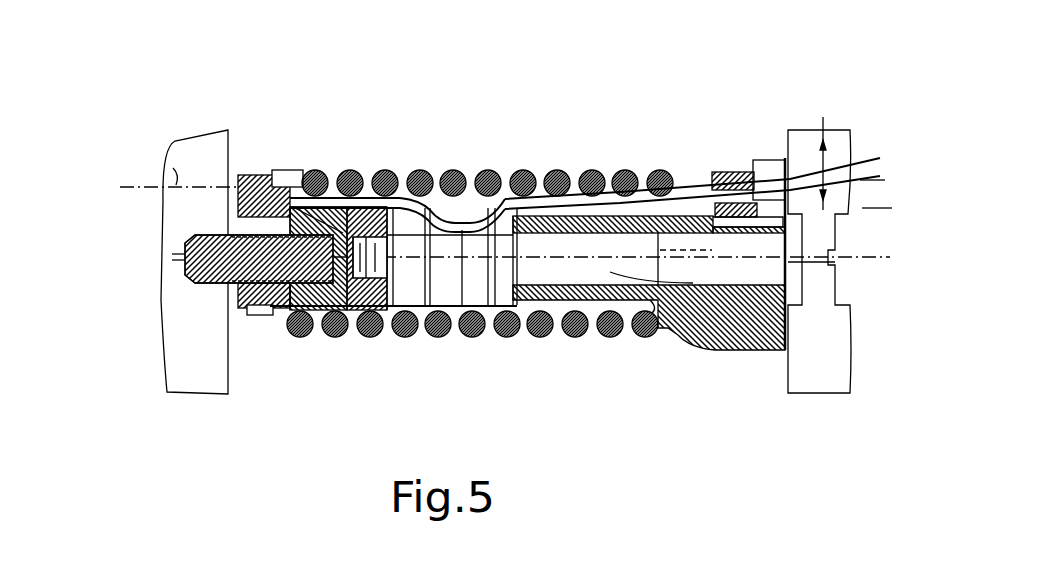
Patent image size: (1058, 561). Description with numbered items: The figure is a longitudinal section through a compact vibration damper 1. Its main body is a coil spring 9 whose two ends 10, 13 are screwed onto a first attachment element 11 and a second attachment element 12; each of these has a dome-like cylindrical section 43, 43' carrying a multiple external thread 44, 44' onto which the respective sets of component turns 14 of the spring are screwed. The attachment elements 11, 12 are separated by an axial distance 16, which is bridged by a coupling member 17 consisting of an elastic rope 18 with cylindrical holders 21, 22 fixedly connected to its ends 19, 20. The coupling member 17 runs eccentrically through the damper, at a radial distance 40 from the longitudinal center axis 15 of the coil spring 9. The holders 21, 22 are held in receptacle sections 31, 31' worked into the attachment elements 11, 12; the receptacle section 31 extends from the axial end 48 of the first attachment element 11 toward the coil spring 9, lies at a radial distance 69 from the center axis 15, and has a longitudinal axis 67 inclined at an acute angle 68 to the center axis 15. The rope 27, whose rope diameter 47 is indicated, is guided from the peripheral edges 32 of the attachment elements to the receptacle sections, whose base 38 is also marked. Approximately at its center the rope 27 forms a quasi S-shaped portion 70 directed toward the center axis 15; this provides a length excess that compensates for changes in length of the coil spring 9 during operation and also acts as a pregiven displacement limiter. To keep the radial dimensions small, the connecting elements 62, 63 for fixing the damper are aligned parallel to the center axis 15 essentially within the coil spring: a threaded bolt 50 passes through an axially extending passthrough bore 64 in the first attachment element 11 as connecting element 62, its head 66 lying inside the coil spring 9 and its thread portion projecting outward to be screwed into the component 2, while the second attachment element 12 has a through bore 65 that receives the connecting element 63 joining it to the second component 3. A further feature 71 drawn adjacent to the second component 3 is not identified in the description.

The vibration damper 1 is at (420, 62).
The component 2 is at (185, 396).
The second component 3 is at (827, 378).
The coil spring 9 is at (532, 168).
The end of the coil spring 10 is at (300, 140).
The first attachment element 11 is at (270, 330).
The second attachment element 12 is at (668, 335).
The end of the coil spring 13 is at (636, 136).
The component turns 14 is at (316, 165).
The longitudinal center axis 15 is at (835, 261).
The axial distance 16 is at (448, 330).
The coupling member 17 is at (693, 166).
The elastic rope 18 is at (401, 232).
The end of the rope 19 is at (235, 200).
The end of the rope 20 is at (762, 160).
The holder 21 is at (249, 165).
The holder 22 is at (723, 160).
The rope 27 is at (505, 180).
The receptacle section 31 is at (345, 126).
The receptacle section 31' is at (693, 94).
The peripheral edge 32 is at (298, 165).
The base of the receptacle section 38 is at (700, 222).
The radial distance 40 is at (572, 343).
The cylindrical section 43 is at (328, 382).
The cylindrical section 43' is at (635, 365).
The multiple external thread 44 is at (300, 412).
The multiple external thread 44' is at (666, 393).
The rope diameter 47 is at (847, 162).
The axial end 48 is at (227, 222).
The threaded bolt 50 is at (180, 240).
The connecting element 62 is at (245, 290).
The connecting element 63 is at (818, 240).
The passthrough bore 64 is at (255, 320).
The through bore 65 is at (705, 318).
The head of the threaded bolt 66 is at (387, 330).
The longitudinal axis 67 is at (158, 178).
The acute angle 68 is at (173, 180).
The radial distance 69 is at (358, 160).
The S-shaped portion 70 is at (462, 222).
The flange 71 is at (790, 322).